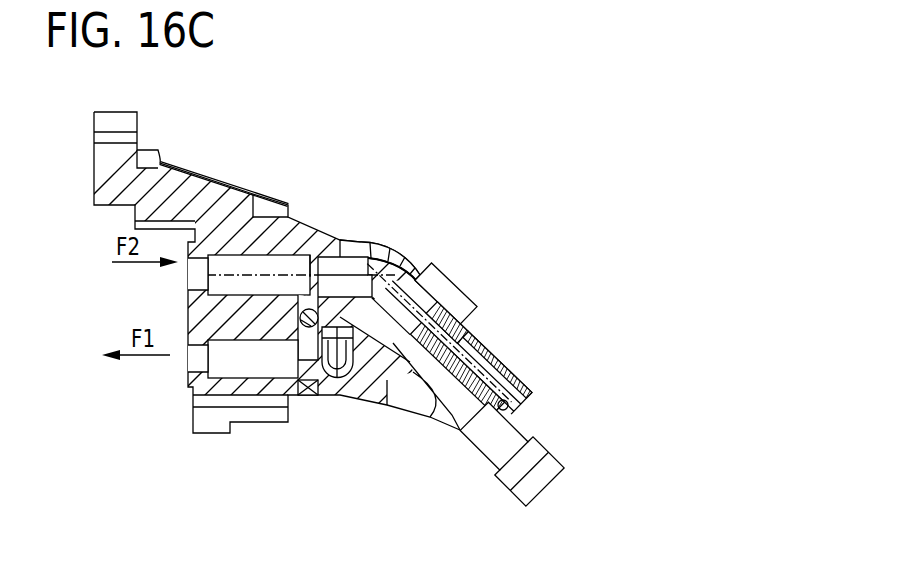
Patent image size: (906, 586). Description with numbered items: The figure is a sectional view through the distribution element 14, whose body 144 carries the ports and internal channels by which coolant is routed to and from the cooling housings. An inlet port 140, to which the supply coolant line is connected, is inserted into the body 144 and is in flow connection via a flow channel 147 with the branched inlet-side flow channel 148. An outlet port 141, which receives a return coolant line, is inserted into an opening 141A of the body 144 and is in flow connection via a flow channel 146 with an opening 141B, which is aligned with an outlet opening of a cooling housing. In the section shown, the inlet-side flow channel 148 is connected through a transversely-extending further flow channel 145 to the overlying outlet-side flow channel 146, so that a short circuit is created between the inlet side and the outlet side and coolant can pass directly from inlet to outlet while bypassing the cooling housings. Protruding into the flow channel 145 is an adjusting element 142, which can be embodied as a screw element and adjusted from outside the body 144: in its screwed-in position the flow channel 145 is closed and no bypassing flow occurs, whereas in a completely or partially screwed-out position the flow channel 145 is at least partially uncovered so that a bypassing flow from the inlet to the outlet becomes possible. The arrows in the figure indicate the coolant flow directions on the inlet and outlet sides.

The distribution element 14 is at (336, 122).
The inlet port 140 is at (535, 487).
The outlet port 141 is at (508, 368).
The opening 141A is at (440, 312).
The opening 141B is at (197, 284).
The adjusting element 142 is at (303, 332).
The body 144 is at (214, 201).
The flow channel 145 is at (310, 287).
The flow channel 146 is at (352, 270).
The flow channel 147 is at (348, 352).
The flow channel 148 is at (238, 367).